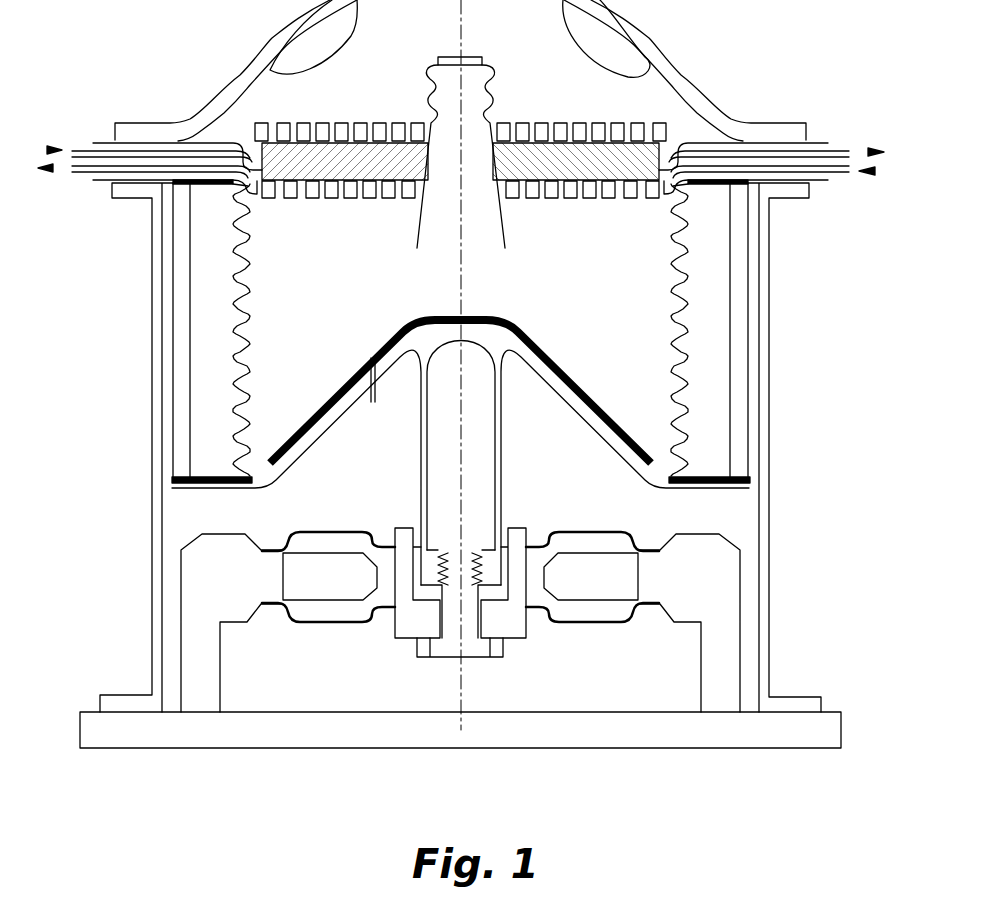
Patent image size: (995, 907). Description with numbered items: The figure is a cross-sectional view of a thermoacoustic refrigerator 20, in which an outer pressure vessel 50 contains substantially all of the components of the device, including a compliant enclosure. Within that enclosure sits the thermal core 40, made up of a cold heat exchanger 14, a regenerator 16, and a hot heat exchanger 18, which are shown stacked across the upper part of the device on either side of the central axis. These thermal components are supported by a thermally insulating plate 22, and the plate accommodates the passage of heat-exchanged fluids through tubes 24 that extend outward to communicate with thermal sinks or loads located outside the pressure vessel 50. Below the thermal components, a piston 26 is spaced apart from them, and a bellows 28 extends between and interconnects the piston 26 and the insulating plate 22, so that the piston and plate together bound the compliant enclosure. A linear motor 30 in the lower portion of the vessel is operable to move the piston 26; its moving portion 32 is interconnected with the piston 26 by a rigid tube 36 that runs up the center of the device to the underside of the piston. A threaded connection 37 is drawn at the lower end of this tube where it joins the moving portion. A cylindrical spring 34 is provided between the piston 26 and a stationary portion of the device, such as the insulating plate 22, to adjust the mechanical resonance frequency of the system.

The cold heat exchanger 14 is at (353, 192).
The regenerator 16 is at (548, 165).
The hot heat exchanger 18 is at (538, 124).
The thermoacoustic refrigerator 20 is at (730, 70).
The thermally insulating plate 22 is at (688, 128).
The tubes 24 is at (88, 150).
The piston 26 is at (590, 437).
The bellows 28 is at (250, 312).
The linear motor 30 is at (700, 680).
The moving portion 32 is at (518, 528).
The cylindrical spring 34 is at (748, 267).
The rigid tube 36 is at (422, 474).
The threaded stud 37 is at (452, 653).
The thermal core 40 is at (293, 158).
The outer pressure vessel 50 is at (146, 502).